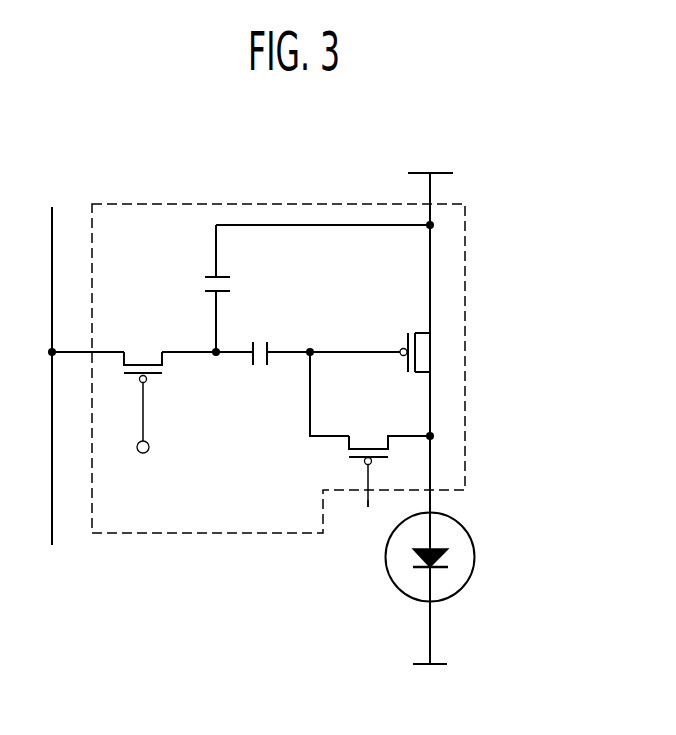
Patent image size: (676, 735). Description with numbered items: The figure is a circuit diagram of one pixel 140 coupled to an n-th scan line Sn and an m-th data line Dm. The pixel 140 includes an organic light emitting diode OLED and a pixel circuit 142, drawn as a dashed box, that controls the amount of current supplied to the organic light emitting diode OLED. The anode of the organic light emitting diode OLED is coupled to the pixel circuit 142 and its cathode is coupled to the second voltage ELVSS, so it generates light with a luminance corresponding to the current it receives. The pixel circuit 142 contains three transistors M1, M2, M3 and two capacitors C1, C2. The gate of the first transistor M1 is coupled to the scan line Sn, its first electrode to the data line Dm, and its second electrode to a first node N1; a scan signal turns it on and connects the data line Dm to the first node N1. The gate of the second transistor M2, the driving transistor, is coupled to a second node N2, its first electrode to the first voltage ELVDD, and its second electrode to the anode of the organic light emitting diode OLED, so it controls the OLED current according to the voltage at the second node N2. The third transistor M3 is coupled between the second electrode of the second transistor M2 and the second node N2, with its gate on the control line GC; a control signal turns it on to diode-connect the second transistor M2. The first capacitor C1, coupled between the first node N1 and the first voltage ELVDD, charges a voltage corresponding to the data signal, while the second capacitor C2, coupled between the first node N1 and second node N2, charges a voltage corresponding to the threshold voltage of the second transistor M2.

The pixel 140 is at (522, 198).
The pixel circuit 142 is at (465, 366).
The m-th data line Dm is at (49, 358).
The n-th scan line Sn is at (144, 465).
The control line GC is at (367, 523).
The first transistor M1 is at (143, 383).
The second transistor (driving transistor) M2 is at (428, 352).
The third transistor M3 is at (389, 458).
The first capacitor C1 is at (306, 288).
The second capacitor C2 is at (324, 338).
The first node N1 is at (215, 371).
The second node N2 is at (327, 392).
The organic light emitting diode OLED is at (461, 557).
The first voltage ELVDD is at (427, 155).
The second voltage ELVSS is at (427, 684).